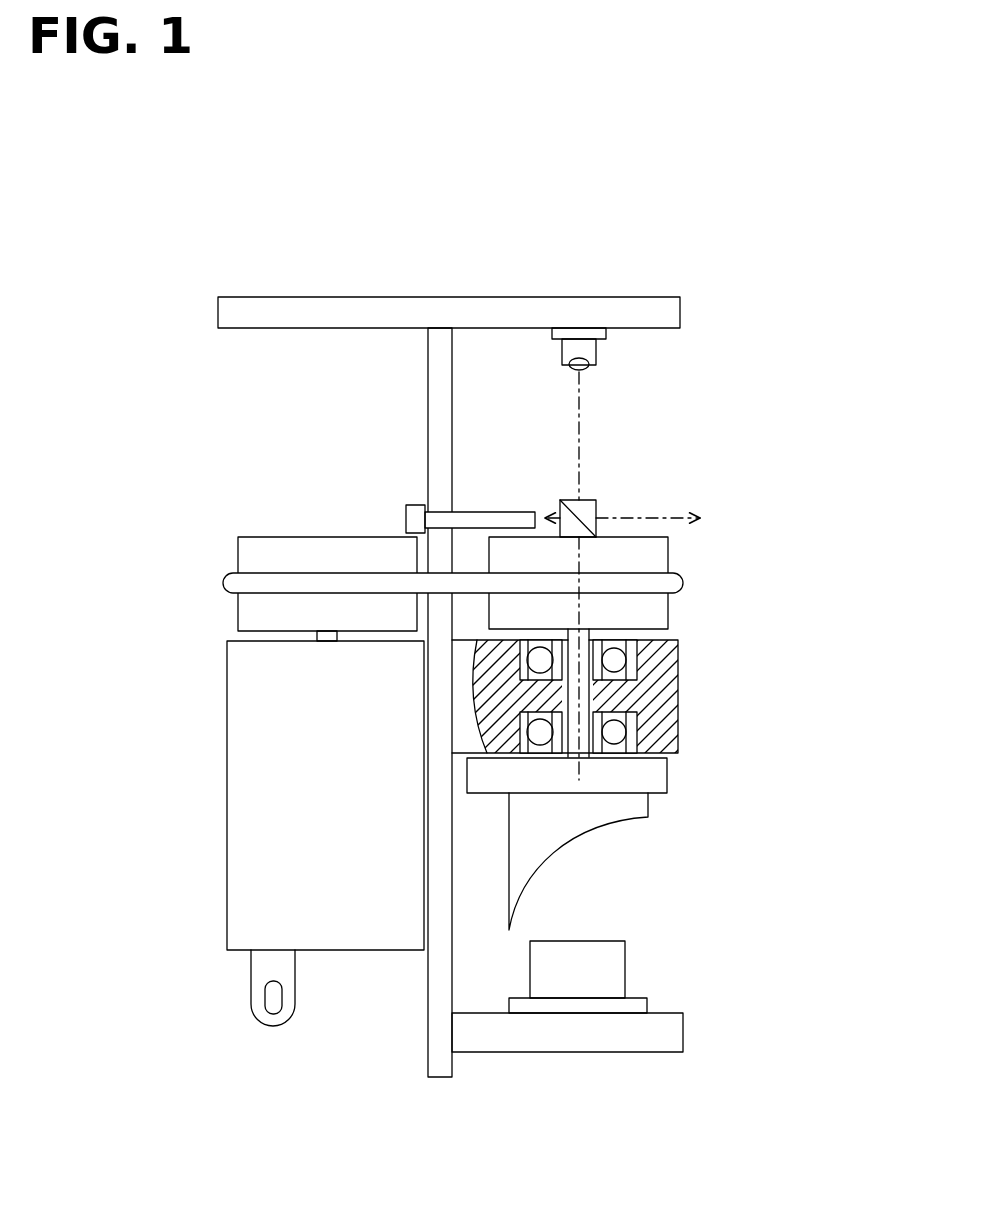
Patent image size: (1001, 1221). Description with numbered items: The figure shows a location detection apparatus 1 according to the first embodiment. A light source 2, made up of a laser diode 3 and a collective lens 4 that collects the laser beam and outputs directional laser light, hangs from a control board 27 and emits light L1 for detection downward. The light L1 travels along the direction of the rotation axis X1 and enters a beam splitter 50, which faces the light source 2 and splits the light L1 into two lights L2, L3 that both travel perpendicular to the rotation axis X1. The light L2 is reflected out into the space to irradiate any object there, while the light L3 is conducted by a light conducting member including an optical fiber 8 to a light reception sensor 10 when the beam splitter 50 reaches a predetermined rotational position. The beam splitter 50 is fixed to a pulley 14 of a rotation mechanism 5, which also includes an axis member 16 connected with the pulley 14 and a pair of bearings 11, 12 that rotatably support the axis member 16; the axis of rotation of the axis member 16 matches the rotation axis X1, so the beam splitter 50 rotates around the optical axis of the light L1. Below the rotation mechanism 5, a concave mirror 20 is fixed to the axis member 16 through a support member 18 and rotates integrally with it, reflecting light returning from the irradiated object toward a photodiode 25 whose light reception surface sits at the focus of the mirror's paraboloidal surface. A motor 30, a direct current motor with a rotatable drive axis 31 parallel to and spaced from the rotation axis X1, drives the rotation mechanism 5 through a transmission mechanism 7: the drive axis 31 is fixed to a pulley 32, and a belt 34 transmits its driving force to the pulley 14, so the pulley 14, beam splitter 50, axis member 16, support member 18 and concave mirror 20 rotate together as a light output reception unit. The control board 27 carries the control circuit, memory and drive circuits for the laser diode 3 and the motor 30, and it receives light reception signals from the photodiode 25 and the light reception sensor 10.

The location detection apparatus 1 is at (606, 260).
The light source 2 is at (629, 366).
The laser diode 3 is at (596, 354).
The collective lens 4 is at (587, 370).
The rotation mechanism 5 is at (574, 692).
The transmission mechanism 7 is at (448, 539).
The optical fiber 8 is at (482, 512).
The light reception sensor 10 is at (412, 505).
The bearing 11 is at (645, 662).
The bearing 12 is at (637, 727).
The pulley 14 is at (668, 550).
The axis member 16 is at (588, 692).
The support member 18 is at (668, 775).
The concave mirror 20 is at (650, 808).
The photodiode 25 is at (625, 972).
The control board 27 is at (272, 297).
The motor 30 is at (226, 773).
The drive axis 31 is at (318, 634).
The pulley 32 is at (238, 550).
The belt 34 is at (226, 583).
The beam splitter 50 is at (600, 494).
The light for detection L1 is at (580, 410).
The light L2 is at (660, 510).
The light L3 is at (553, 515).
The rotation axis X1 is at (578, 617).